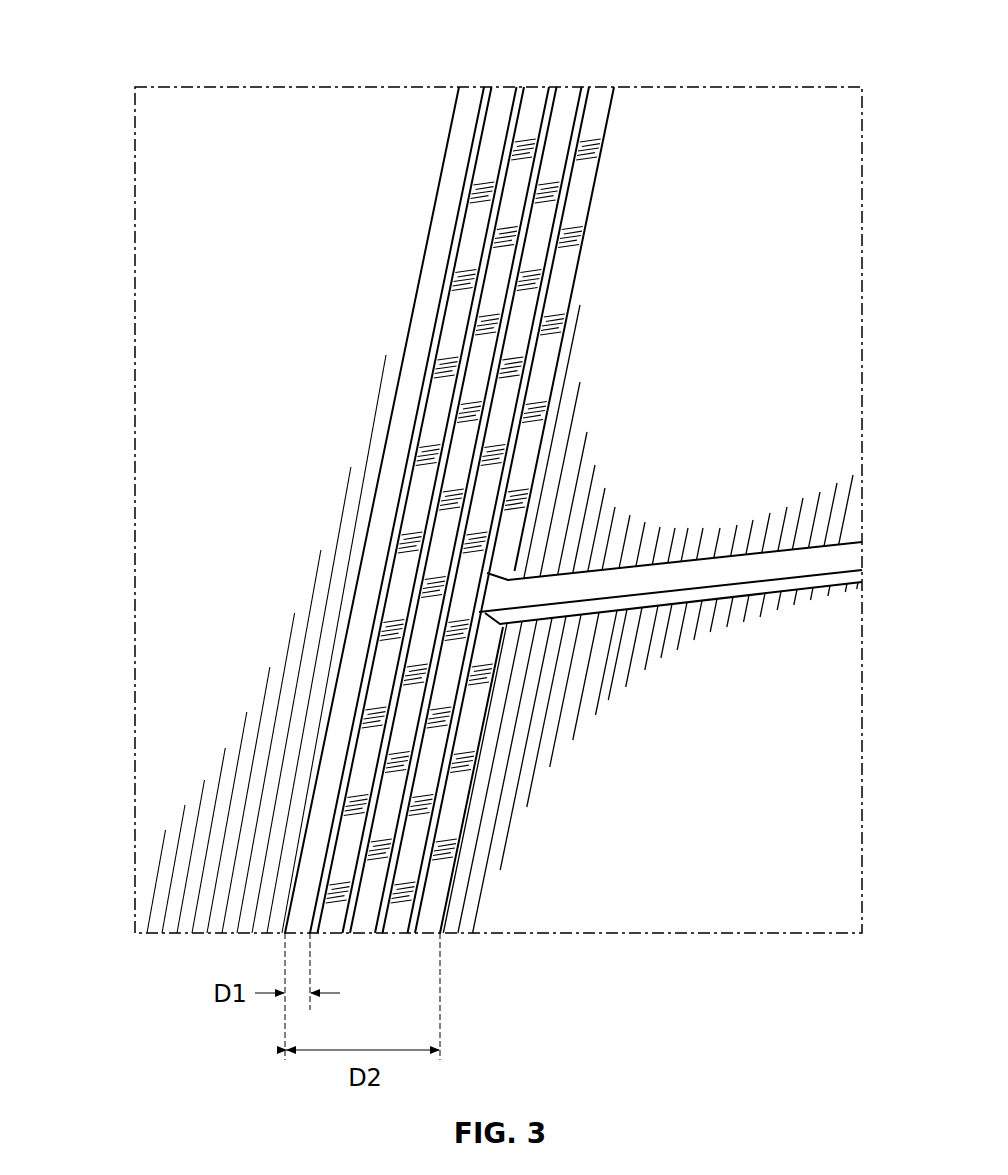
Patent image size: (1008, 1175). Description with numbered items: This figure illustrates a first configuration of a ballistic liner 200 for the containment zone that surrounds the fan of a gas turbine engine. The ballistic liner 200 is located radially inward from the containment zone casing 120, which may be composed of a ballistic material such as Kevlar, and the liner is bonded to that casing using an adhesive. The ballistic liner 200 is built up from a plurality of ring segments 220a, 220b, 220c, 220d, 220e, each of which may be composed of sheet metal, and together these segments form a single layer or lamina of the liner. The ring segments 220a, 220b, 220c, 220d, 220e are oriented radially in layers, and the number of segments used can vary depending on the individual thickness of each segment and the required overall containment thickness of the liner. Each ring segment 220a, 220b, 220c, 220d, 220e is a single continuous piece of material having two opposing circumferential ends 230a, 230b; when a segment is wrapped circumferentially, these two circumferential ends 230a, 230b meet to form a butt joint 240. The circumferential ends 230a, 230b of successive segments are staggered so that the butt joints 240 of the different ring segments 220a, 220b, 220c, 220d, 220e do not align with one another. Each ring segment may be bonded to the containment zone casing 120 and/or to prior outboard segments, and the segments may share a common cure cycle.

The containment zone casing 120 is at (222, 250).
The ballistic liner 200 is at (510, 467).
The ring segment 220a is at (684, 112).
The ring segment 220b is at (563, 117).
The ring segment 220c is at (530, 117).
The ring segment 220d is at (498, 103).
The ring segment 220e is at (467, 107).
The circumferential end 230a is at (690, 558).
The circumferential end 230b is at (773, 593).
The butt joint 240 is at (575, 590).